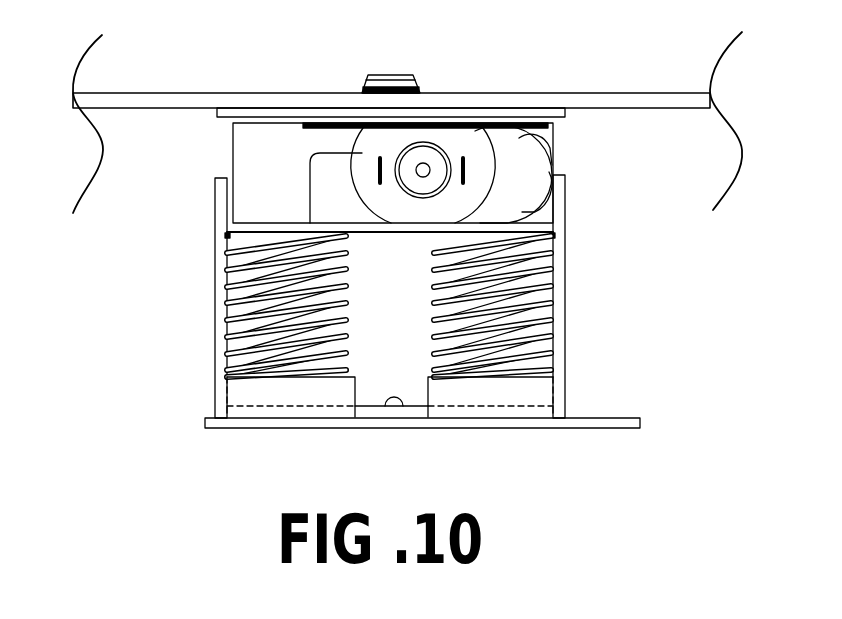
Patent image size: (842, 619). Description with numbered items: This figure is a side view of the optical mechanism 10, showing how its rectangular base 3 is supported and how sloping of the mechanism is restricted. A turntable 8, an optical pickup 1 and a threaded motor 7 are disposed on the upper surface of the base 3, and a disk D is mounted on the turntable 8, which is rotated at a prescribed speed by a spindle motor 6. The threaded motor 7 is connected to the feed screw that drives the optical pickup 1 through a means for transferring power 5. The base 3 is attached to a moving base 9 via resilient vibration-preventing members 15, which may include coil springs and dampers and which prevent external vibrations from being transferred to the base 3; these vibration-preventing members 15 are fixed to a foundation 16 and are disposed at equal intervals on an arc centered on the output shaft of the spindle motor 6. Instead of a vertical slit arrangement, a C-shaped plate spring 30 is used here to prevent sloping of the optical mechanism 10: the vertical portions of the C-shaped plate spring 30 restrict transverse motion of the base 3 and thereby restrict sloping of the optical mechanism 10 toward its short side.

The disk D is at (185, 93).
The optical pickup 1 is at (233, 145).
The base 3 is at (252, 222).
The means for transferring power 5 is at (559, 150).
The spindle motor 6 is at (338, 152).
The threaded motor 7 is at (450, 132).
The turntable 8 is at (398, 82).
The moving base 9 is at (612, 418).
The optical mechanism 10 is at (125, 290).
The vibration-preventing members 15 is at (227, 292).
The foundation 16 is at (235, 408).
The C-shaped plate spring 30 is at (398, 400).